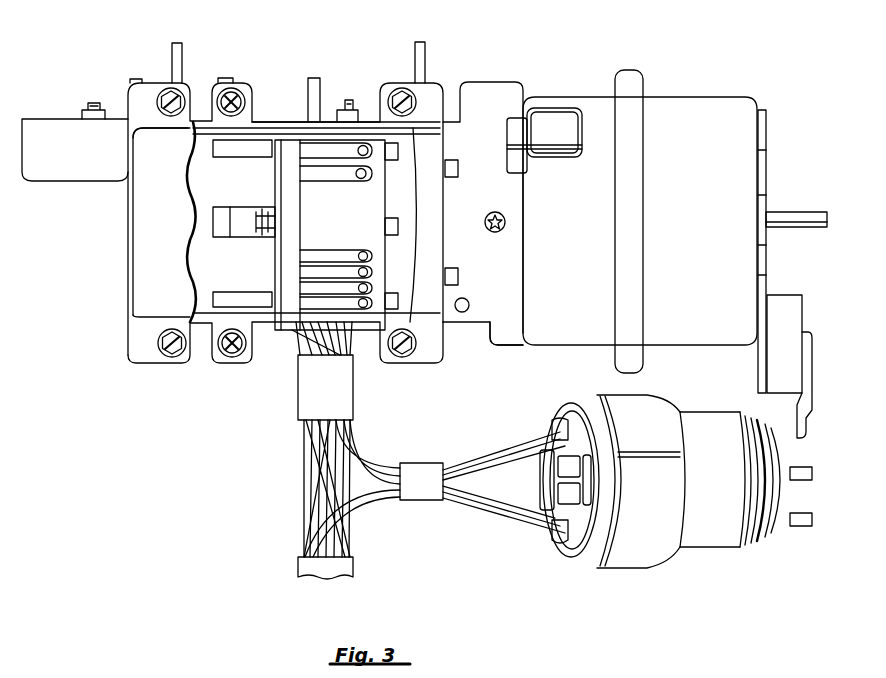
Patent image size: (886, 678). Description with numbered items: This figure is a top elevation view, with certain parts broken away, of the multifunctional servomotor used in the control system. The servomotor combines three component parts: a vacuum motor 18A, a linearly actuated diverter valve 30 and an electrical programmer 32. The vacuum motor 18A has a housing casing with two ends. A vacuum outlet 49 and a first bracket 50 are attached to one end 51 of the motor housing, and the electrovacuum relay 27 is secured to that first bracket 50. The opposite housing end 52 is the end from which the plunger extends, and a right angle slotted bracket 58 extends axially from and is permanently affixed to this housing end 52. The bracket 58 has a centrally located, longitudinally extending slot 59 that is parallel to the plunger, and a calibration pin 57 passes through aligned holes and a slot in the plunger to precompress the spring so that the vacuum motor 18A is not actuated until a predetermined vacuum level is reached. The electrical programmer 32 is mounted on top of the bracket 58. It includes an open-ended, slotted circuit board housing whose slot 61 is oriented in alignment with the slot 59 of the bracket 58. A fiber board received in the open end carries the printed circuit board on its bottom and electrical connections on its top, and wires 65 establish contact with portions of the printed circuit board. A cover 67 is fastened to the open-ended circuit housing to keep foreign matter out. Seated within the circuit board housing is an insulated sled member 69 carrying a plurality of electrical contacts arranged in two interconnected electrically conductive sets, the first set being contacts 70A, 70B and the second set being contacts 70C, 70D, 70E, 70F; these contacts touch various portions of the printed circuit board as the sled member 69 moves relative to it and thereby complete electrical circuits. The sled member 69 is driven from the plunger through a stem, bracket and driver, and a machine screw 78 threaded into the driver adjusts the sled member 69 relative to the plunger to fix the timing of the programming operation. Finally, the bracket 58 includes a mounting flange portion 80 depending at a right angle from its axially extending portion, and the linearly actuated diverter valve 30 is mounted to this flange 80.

The vacuum motor 18A is at (690, 94).
The electrovacuum relay 27 is at (727, 487).
The linearly actuated diverter valve 30 is at (317, 72).
The electrical programmer 32 is at (128, 247).
The vacuum outlet 49 is at (796, 212).
The first bracket 50 is at (767, 269).
The end of motor housing casing 51 is at (763, 110).
The housing end 52 is at (523, 323).
The calibration pin 57 is at (506, 222).
The right angle slotted bracket 58 is at (490, 105).
The slot 59 is at (228, 215).
The slot 61 is at (243, 206).
The wires 65 is at (305, 512).
The cover 67 is at (155, 160).
The insulated sled member 69 is at (355, 217).
The electrical contact 70A is at (363, 145).
The electrical contact 70B is at (367, 172).
The electrical contact 70C is at (368, 256).
The electrical contact 70D is at (368, 272).
The electrical contact 70E is at (368, 288).
The electrical contact 70F is at (366, 311).
The machine screw 78 is at (264, 233).
The mounting flange portion 80 is at (80, 156).